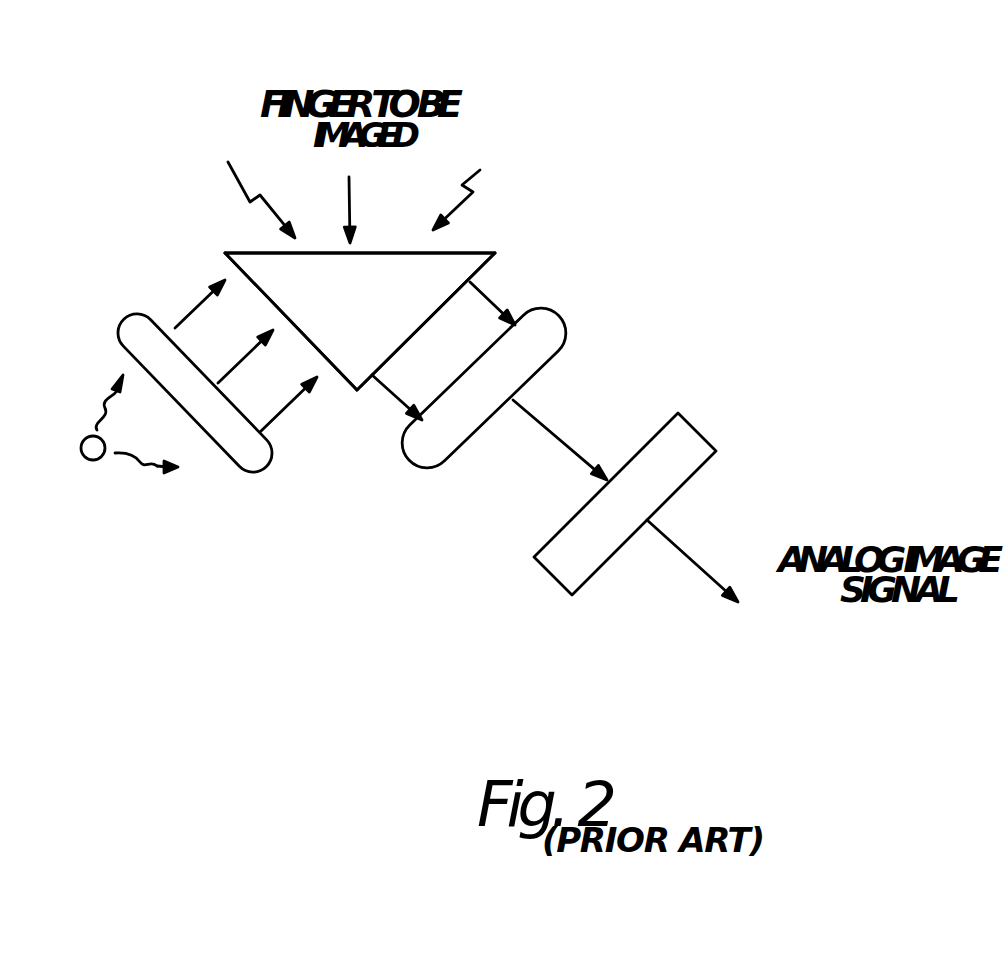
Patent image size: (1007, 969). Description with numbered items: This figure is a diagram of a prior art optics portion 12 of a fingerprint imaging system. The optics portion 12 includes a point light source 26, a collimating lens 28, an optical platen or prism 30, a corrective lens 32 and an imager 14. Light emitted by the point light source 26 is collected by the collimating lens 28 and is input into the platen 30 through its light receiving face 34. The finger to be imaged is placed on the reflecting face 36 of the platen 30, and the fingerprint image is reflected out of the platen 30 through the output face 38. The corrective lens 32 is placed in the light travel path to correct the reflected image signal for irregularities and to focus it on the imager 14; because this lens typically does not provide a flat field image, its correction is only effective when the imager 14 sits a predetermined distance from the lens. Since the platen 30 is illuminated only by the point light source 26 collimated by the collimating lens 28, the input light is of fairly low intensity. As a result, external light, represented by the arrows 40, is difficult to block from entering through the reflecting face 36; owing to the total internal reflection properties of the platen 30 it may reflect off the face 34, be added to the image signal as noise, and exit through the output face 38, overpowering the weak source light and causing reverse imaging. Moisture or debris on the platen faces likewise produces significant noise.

The optics portion 12 is at (571, 112).
The imager 14 is at (553, 580).
The point light source 26 is at (85, 462).
The collimating lens 28 is at (140, 317).
The optical platen (prism) 30 is at (480, 240).
The corrective lens 32 is at (547, 340).
The light receiving face 34 is at (320, 347).
The reflecting face 36 is at (245, 252).
The output face 38 is at (442, 305).
The external light 40 is at (230, 176).